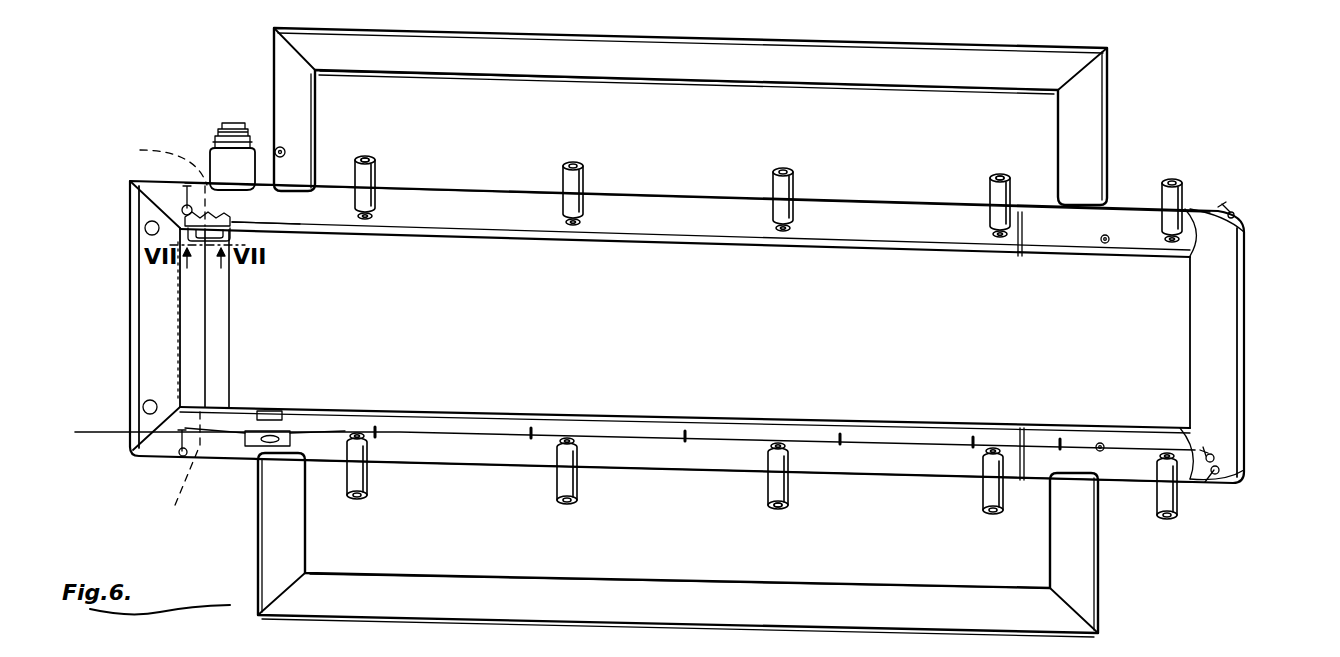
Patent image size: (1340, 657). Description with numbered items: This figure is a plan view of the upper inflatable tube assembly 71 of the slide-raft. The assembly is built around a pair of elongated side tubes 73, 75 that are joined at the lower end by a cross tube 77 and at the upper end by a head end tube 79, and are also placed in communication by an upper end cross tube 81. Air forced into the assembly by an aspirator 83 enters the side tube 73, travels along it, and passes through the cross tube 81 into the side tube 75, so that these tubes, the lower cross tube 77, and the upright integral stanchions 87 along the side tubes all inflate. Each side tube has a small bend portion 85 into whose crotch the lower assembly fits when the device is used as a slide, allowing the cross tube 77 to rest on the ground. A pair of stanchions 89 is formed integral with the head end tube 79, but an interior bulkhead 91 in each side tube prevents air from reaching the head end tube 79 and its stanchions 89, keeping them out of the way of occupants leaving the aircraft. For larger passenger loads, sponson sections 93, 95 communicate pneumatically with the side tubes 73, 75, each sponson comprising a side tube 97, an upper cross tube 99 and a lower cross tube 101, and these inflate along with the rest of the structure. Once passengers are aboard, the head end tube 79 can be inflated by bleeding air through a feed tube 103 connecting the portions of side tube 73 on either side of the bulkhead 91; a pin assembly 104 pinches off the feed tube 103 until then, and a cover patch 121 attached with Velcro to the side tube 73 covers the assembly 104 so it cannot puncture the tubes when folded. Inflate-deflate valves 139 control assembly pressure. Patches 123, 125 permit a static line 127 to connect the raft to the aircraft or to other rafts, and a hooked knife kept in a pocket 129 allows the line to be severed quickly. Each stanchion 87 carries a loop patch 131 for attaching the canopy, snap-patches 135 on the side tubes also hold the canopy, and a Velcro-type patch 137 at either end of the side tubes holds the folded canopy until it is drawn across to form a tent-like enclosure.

The upper inflatable tube assembly 71 is at (1120, 172).
The side tube 73 is at (643, 209).
The side tube 75 is at (632, 460).
The cross tube 77 is at (1222, 345).
The head end tube 79 is at (172, 324).
The upper end cross tube 81 is at (214, 360).
The aspirator 83 is at (216, 165).
The bend portion 85 is at (1180, 258).
The stanchions 87 is at (372, 178).
The stanchions 89 is at (145, 229).
The interior bulkhead 91 is at (155, 339).
The sponson section 93 is at (555, 88).
The sponson section 95 is at (490, 568).
The side tube 97 is at (640, 72).
The upper cross tube 99 is at (293, 108).
The lower cross tube 101 is at (1063, 117).
The feed tube 103 is at (232, 239).
The assembly 104 is at (220, 219).
The cover patch 121 is at (232, 222).
The patch 123 is at (256, 442).
The patch 125 is at (1225, 456).
The static line 127 is at (85, 438).
The pocket 129 is at (272, 410).
The loop patch 131 is at (368, 160).
The snap-patches 135 is at (1102, 243).
The Velcro-type patch 137 is at (184, 190).
The inflate-deflate valves 139 is at (278, 148).